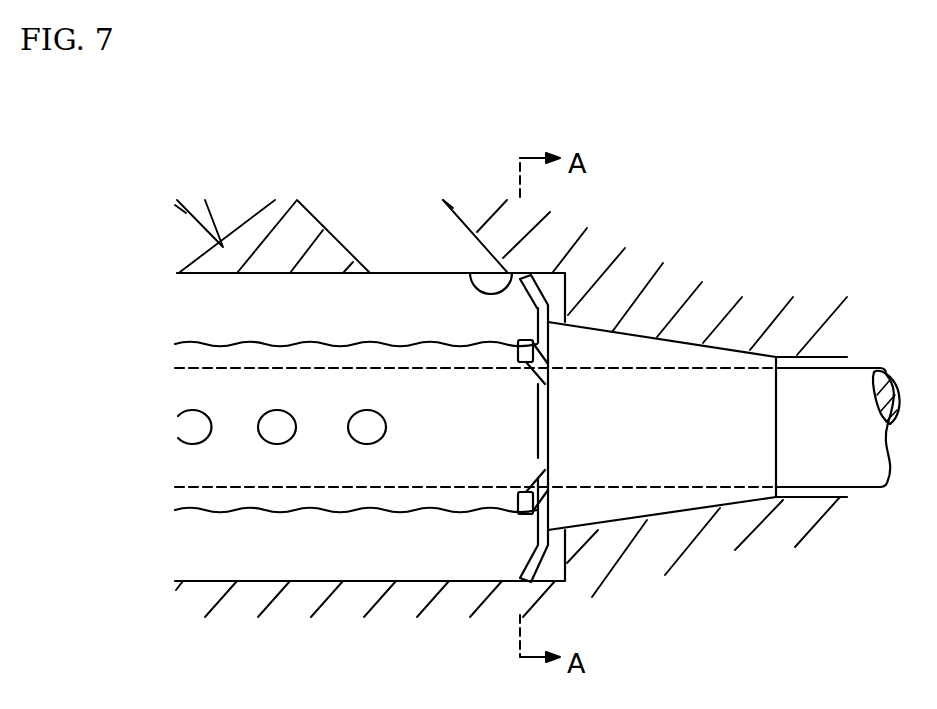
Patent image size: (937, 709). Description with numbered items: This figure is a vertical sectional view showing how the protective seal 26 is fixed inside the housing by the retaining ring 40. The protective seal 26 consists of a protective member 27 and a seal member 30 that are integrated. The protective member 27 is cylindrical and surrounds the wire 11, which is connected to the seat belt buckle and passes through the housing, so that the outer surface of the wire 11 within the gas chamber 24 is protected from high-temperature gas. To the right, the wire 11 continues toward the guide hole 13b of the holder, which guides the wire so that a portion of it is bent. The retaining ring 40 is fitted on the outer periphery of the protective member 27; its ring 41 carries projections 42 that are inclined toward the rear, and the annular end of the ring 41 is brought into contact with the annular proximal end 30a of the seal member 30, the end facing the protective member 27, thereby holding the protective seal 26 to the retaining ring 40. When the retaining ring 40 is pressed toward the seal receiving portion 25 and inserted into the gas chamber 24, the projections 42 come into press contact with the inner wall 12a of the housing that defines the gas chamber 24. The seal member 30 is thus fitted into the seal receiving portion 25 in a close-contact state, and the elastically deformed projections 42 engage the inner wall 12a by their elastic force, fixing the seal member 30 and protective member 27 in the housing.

The gas chamber 24 is at (397, 292).
The inner wall of the housing 12a is at (470, 273).
The projections 42 is at (549, 274).
The seal member 30 is at (628, 352).
The wire 11 is at (821, 393).
The protective seal 26 is at (228, 336).
The ring 41 is at (536, 405).
The protective member 27 is at (320, 503).
The retaining ring 40 is at (535, 533).
The annular proximal end of the seal member 30a is at (531, 452).
The seal receiving portion 25 is at (700, 506).
The guide hole 13b is at (808, 497).